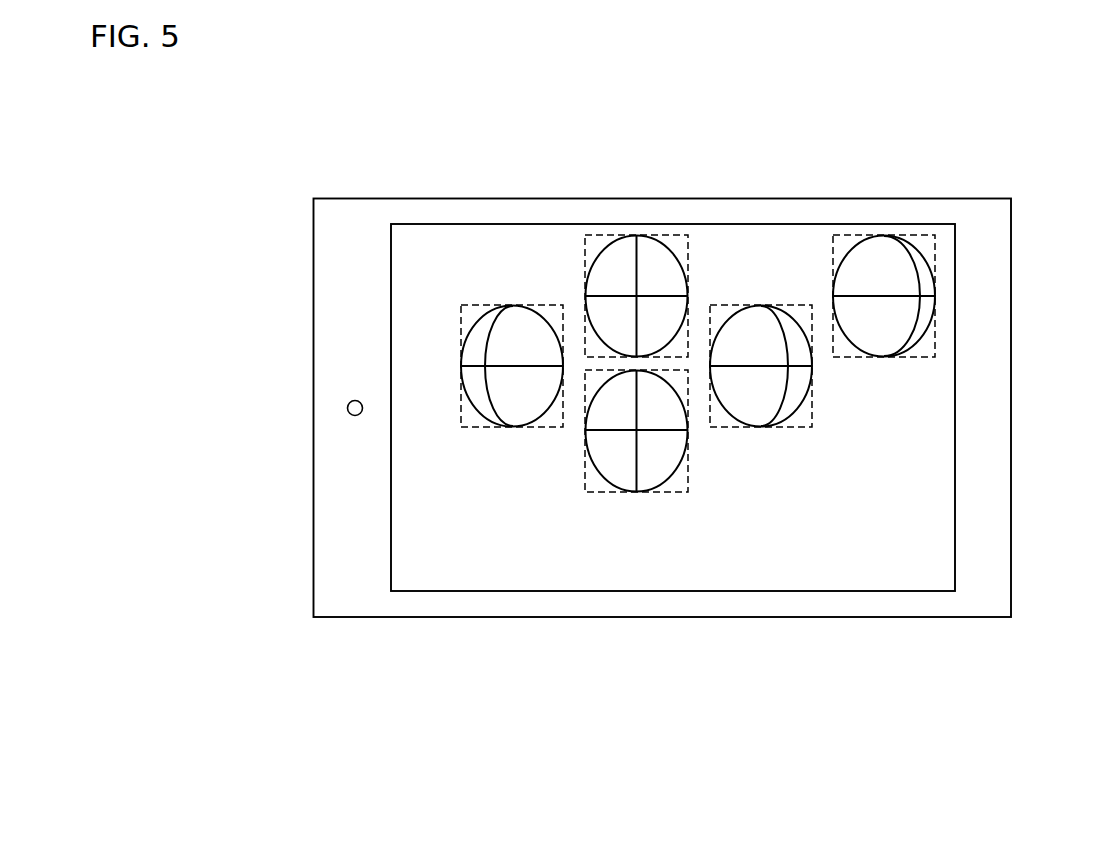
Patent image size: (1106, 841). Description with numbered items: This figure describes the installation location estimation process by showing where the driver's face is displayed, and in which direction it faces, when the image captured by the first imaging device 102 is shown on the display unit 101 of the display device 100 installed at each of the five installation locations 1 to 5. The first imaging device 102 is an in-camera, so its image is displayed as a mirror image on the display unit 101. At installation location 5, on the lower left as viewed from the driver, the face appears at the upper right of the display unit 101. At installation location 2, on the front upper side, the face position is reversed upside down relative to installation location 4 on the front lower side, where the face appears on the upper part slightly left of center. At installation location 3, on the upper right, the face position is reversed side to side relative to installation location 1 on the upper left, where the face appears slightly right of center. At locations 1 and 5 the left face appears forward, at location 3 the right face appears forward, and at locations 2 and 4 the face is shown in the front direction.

The display device 100 is at (946, 197).
The display unit 101 is at (922, 513).
The first imaging device 102 is at (347, 406).
The installation location 1 is at (783, 366).
The installation location 2 is at (658, 431).
The installation location 3 is at (512, 387).
The installation location 4 is at (658, 296).
The installation location 5 is at (862, 296).